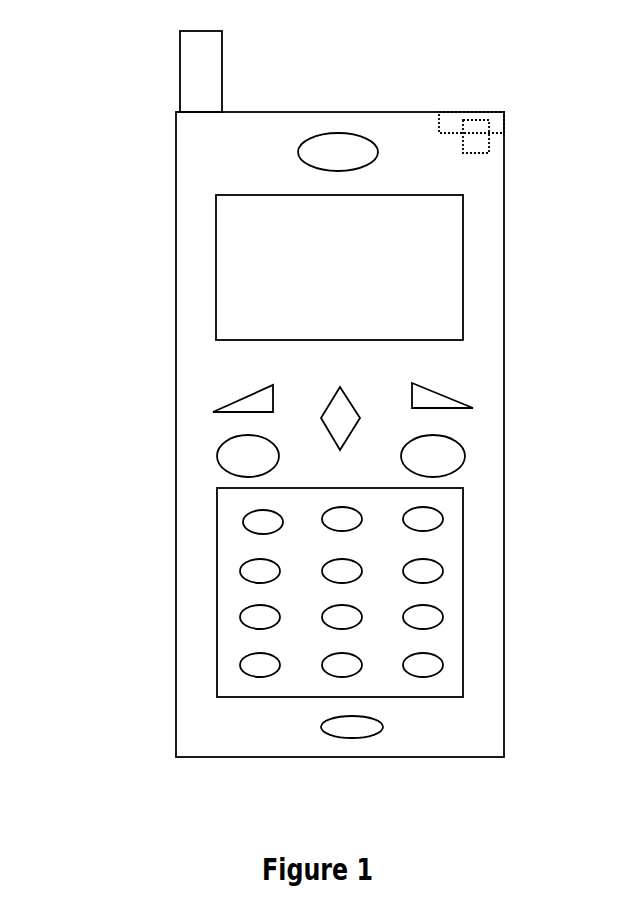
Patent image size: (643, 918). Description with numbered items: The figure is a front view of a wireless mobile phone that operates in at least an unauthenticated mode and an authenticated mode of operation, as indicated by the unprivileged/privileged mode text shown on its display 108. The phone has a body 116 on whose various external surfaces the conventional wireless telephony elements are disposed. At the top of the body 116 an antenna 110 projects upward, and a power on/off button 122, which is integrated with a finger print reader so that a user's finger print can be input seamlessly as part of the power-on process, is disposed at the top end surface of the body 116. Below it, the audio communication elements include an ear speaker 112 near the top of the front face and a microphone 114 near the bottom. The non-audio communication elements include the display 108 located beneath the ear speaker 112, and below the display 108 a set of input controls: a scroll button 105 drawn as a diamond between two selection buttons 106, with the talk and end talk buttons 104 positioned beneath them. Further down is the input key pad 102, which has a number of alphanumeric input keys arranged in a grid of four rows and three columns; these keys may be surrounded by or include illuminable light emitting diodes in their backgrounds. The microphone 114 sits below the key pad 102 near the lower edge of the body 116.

The input key pad 102 is at (247, 593).
The "talk" and "end talk" buttons 104 is at (237, 468).
The scroll button 105 is at (342, 405).
The selection buttons 106 is at (238, 410).
The display 108 is at (225, 240).
The antenna 110 is at (202, 86).
The ear speaker 112 is at (304, 153).
The microphone 114 is at (325, 728).
The body 116 is at (207, 288).
The power on/off button 122 is at (467, 120).